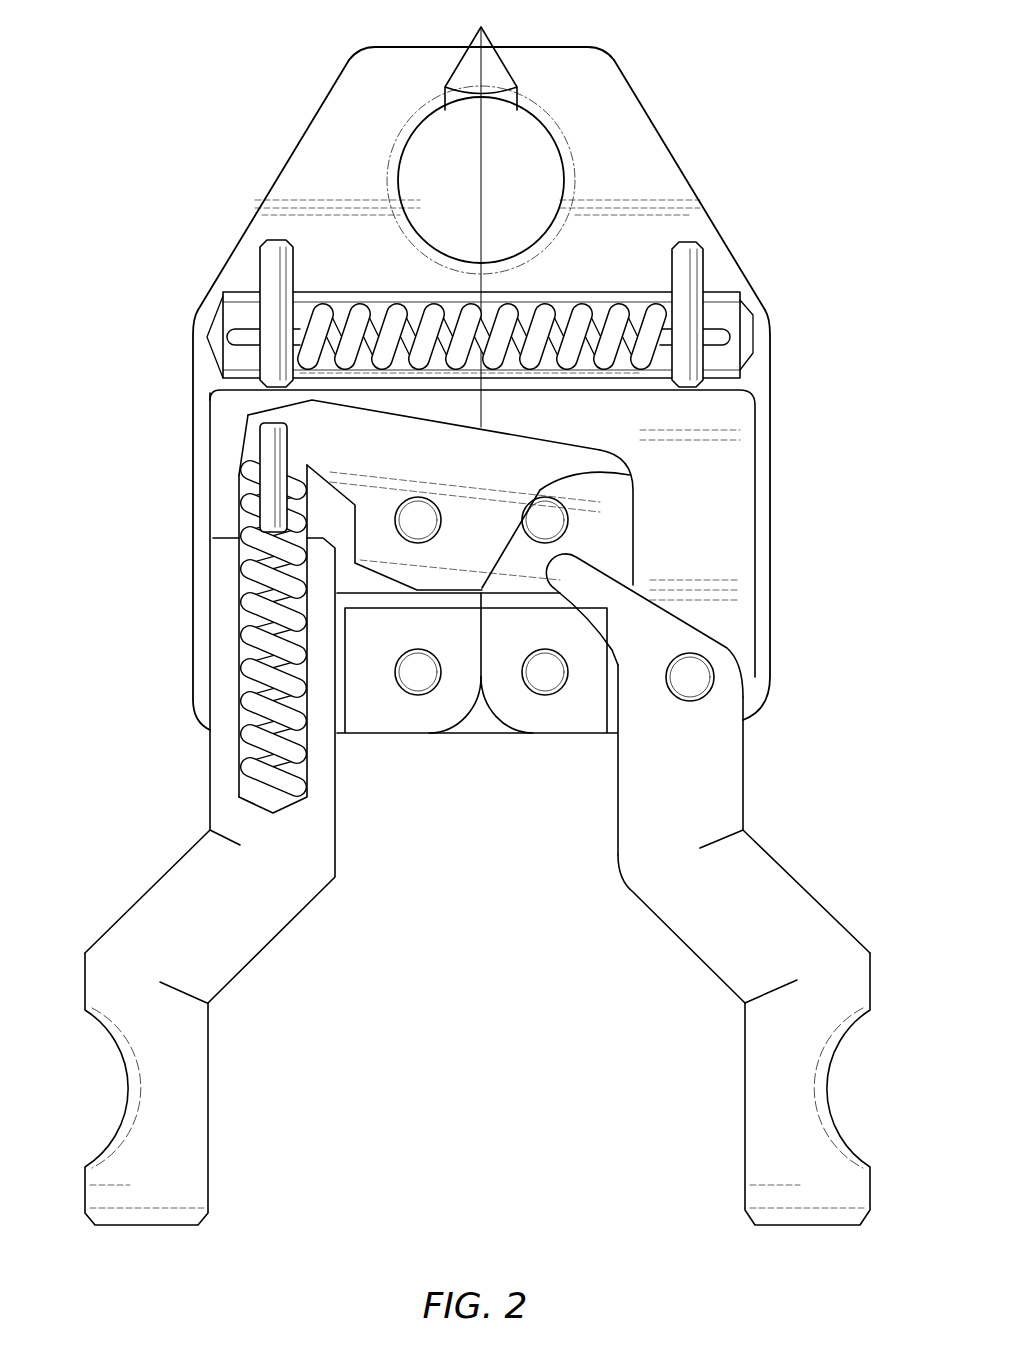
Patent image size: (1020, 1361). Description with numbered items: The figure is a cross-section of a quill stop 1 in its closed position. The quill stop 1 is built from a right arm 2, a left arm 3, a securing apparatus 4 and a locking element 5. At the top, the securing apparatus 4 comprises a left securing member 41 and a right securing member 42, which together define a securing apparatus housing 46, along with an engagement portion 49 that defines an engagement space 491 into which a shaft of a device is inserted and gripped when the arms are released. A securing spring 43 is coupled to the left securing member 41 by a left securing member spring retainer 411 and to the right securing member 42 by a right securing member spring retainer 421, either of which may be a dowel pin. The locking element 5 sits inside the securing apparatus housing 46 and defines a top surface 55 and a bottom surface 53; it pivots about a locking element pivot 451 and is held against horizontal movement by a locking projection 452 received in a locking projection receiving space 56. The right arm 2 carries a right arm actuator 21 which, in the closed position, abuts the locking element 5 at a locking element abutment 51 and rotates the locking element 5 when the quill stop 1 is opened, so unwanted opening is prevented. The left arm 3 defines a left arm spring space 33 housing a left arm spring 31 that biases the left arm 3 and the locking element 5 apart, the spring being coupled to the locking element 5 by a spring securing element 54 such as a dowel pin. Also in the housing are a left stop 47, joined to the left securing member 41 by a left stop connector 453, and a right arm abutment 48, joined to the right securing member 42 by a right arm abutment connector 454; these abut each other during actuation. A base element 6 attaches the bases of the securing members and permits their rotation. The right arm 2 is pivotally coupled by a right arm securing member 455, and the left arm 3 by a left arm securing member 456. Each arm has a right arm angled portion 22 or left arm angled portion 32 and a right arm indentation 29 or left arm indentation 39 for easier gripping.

The quill stop 1 is at (668, 65).
The right arm 2 is at (818, 1000).
The left arm 3 is at (137, 993).
The securing apparatus 4 is at (325, 135).
The locking element 5 is at (545, 455).
The base element 6 is at (478, 723).
The right arm actuator 21 is at (575, 583).
The right arm angled portion 22 is at (765, 905).
The right arm indentation 29 is at (838, 1093).
The left arm spring 31 is at (268, 612).
The left arm angled portion 32 is at (187, 883).
The left arm spring space 33 is at (250, 548).
The left arm indentation 39 is at (118, 1110).
The left securing member 41 is at (290, 208).
The right securing member 42 is at (660, 125).
The securing spring 43 is at (670, 335).
The securing apparatus housing 46 is at (710, 475).
The left stop 47 is at (428, 728).
The right arm abutment 48 is at (518, 712).
The engagement portion 49 is at (481, 30).
The locking element abutment 51 is at (615, 575).
The bottom surface 53 is at (380, 583).
The spring securing element 54 is at (270, 470).
The top surface 55 is at (250, 405).
The locking projection receiving space 56 is at (520, 548).
The left securing member spring retainer 411 is at (268, 278).
The right securing member spring retainer 421 is at (693, 248).
The locking element pivot 451 is at (418, 500).
The locking projection 452 is at (553, 515).
The left stop connector 453 is at (418, 690).
The right arm abutment connector 454 is at (545, 690).
The right arm securing member 455 is at (697, 675).
The left arm securing member 456 is at (247, 685).
The engagement space 491 is at (530, 150).